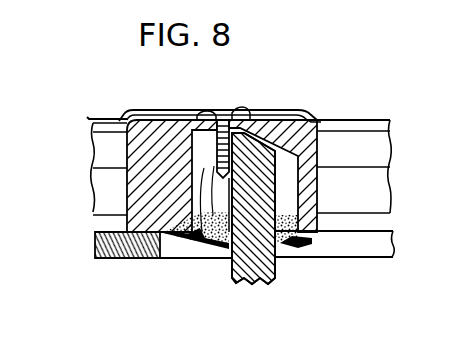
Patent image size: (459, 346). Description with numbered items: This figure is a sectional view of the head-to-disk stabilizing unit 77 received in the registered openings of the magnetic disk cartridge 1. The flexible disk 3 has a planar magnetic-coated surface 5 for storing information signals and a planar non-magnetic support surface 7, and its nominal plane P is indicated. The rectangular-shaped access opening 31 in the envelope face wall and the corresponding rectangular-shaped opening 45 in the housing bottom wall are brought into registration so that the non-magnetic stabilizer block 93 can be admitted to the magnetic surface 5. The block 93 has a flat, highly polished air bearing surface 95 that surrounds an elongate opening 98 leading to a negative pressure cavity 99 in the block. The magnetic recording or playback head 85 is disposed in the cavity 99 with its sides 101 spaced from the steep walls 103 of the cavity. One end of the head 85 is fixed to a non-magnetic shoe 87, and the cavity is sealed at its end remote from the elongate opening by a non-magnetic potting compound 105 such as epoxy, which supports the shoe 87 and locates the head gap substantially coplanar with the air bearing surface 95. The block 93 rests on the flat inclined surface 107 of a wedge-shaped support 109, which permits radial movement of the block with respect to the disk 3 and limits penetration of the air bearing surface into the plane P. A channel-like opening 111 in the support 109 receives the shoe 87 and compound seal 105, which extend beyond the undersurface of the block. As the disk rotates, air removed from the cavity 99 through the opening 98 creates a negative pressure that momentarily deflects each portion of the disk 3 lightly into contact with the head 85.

The flexible disk 3 is at (98, 116).
The nominal plane of the disk P is at (126, 118).
The air bearing surface 95 is at (159, 112).
The stabilizer block 93 is at (203, 112).
The elongate opening 98 is at (240, 106).
The negative pressure cavity 99 is at (230, 122).
The steep walls of the cavity 103 is at (186, 259).
The rectangular-shaped opening 45 is at (356, 204).
The non-magnetic shoe 87 is at (264, 292).
The sides of the magnetic head 101 is at (204, 244).
The magnetic recording or playback head 85 is at (224, 248).
The non-magnetic potting compound 105 is at (290, 252).
The magnetic disk cartridge 1 is at (393, 166).
The rectangular-shaped access opening 31 is at (352, 161).
The magnetic-coated surface 5 is at (358, 122).
The non-magnetic support surface 7 is at (388, 118).
The flat inclined surface 107 is at (360, 226).
The channel-like opening 111 is at (382, 242).
The wedge-shaped support 109 is at (94, 249).
The head-to-disk stabilizing unit 77 is at (110, 228).